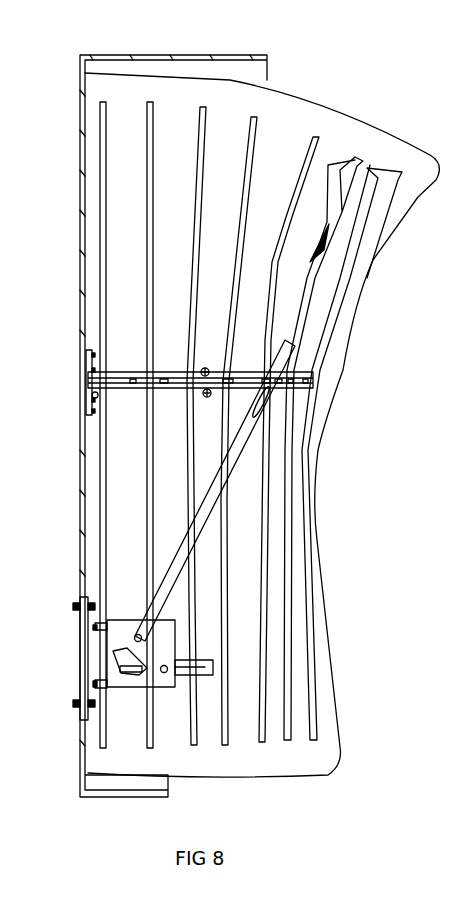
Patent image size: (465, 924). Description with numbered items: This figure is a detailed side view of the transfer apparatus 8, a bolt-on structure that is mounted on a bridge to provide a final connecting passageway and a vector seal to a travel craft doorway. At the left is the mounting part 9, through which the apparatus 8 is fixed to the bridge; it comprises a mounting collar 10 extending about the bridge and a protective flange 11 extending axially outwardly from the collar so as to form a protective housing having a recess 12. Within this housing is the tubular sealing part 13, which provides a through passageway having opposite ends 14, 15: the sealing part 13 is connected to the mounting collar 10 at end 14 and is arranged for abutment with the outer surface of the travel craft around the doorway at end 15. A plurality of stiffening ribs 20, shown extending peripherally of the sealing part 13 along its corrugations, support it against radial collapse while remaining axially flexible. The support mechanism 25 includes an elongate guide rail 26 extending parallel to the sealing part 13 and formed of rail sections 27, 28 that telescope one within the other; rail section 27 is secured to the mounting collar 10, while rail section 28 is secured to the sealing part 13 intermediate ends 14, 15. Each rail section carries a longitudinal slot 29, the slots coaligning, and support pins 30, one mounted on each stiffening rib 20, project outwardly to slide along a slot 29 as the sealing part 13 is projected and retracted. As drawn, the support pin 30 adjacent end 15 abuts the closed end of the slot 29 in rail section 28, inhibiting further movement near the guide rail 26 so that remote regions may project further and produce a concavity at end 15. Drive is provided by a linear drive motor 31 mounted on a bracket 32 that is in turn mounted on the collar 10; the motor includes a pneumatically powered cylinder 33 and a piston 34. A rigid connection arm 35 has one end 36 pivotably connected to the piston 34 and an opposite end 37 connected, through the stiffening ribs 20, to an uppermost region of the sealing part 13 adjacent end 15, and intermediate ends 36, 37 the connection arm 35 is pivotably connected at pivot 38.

The apparatus 8 is at (60, 62).
The mounting part 9 is at (78, 185).
The mounting collar 10 is at (88, 548).
The protective flange 11 is at (137, 791).
The recess 12 is at (101, 782).
The sealing part 13 is at (240, 572).
The end 14 is at (88, 490).
The end 15 is at (312, 428).
The stiffening ribs 20 is at (210, 107).
The support mechanism 25 is at (240, 483).
The guide rail 26 is at (133, 362).
The rail section 27 is at (120, 390).
The rail section 28 is at (314, 390).
The longitudinal slot 29 is at (170, 382).
The support pins 30 is at (235, 380).
The linear drive motor 31 is at (205, 680).
The bracket 32 is at (163, 632).
The pneumatically powered cylinder 33 is at (208, 660).
The piston 34 is at (137, 673).
The connection arm 35 is at (205, 512).
The end 36 is at (105, 658).
The end 37 is at (350, 212).
The pivot 38 is at (138, 632).